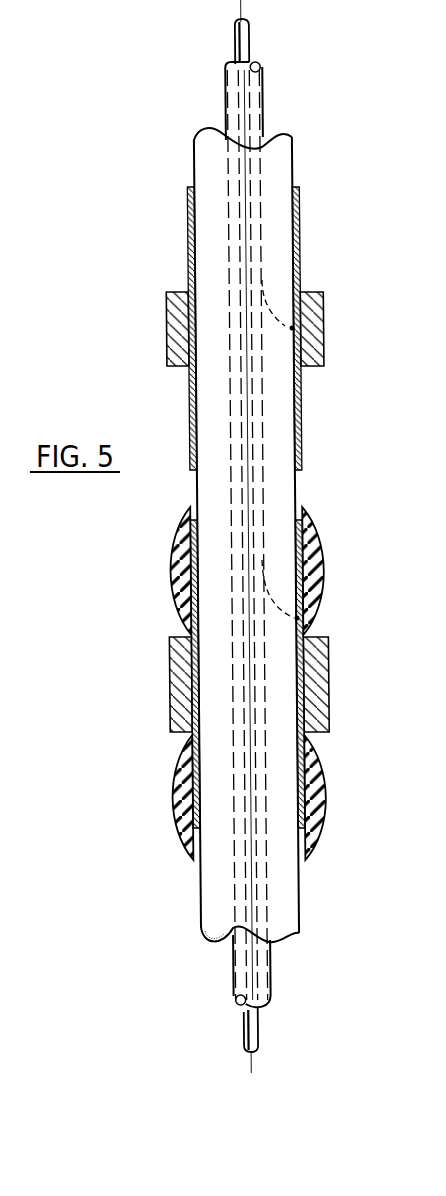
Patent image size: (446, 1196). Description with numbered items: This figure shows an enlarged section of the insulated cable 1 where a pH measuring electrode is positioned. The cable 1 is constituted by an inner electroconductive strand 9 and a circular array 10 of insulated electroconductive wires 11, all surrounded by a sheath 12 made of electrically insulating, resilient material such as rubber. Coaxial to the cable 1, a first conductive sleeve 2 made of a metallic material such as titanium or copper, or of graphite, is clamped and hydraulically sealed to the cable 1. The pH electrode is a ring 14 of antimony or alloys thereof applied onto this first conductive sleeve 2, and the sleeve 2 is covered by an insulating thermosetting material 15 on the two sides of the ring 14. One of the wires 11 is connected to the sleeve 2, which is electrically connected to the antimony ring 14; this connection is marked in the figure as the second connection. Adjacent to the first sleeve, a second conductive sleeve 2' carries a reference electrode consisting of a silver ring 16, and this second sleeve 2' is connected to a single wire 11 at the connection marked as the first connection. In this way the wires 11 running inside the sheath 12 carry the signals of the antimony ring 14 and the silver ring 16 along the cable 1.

The insulated cable 1 is at (298, 902).
The first conductive sleeve 2 is at (201, 674).
The second conductive sleeve 2' is at (291, 328).
The inner electroconductive strand 9 is at (250, 33).
The circular array of insulated electroconductive wires 10 is at (264, 96).
The insulated electroconductive wire 11 is at (292, 328).
The sheath 12 is at (275, 170).
The antimony ring 14 is at (325, 685).
The insulating thermosetting material 15 is at (320, 547).
The silver ring 16 is at (322, 331).